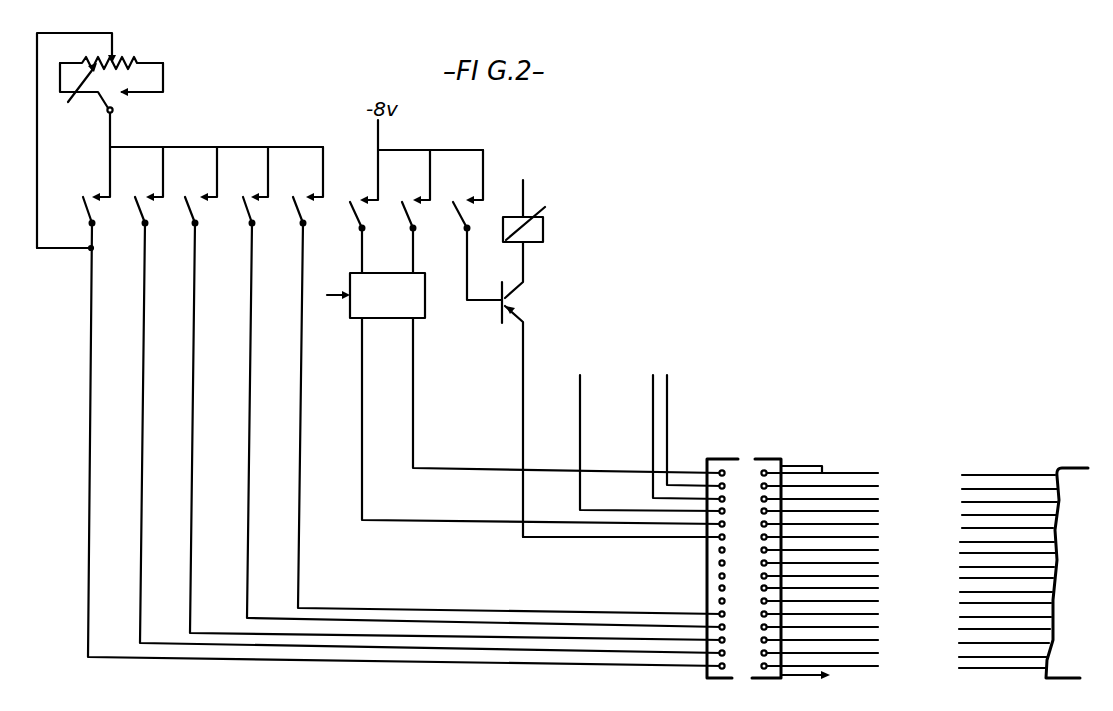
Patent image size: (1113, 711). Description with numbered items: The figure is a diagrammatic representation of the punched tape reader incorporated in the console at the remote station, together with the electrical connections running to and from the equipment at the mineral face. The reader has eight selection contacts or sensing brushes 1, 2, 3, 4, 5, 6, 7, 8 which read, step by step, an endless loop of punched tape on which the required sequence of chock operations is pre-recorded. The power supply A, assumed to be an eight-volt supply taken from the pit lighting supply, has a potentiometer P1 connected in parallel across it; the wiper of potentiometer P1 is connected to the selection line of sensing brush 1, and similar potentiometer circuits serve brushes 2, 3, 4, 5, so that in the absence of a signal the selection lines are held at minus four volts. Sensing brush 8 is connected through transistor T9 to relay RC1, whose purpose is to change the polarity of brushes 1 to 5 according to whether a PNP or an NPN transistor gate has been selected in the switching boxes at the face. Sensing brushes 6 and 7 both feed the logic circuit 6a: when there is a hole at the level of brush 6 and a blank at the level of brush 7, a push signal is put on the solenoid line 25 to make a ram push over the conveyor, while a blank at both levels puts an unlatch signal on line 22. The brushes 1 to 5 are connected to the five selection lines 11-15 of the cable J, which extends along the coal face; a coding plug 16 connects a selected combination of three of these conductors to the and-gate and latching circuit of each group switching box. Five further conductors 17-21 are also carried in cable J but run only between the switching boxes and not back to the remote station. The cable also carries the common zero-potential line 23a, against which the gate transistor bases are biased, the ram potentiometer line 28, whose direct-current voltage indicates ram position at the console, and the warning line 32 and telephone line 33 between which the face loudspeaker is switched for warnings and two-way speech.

The sensing brush 1 is at (379, 431).
The sensing brush 2 is at (428, 425).
The sensing brush 3 is at (453, 418).
The sensing brush 4 is at (482, 412).
The sensing brush 5 is at (507, 405).
The sensing brush 6 is at (364, 237).
The sensing brush 7 is at (416, 237).
The sensing brush 8 is at (477, 251).
The logic circuit 6a is at (376, 295).
The coding plug 16 is at (713, 567).
The further conductors 17-21 is at (878, 548).
The selection lines 11-15 is at (878, 612).
The unlatch line 22 is at (413, 430).
The common line 23a is at (520, 445).
The solenoid line 25 is at (418, 520).
The ram potentiometer/pressure switch line 28 is at (580, 423).
The warning line 32 is at (653, 412).
The telephone line 33 is at (667, 438).
The power supply A is at (106, 140).
The potentiometer P1 is at (73, 93).
The relay RC1 is at (335, 170).
The transistor T9 is at (527, 389).
The cable J is at (815, 576).